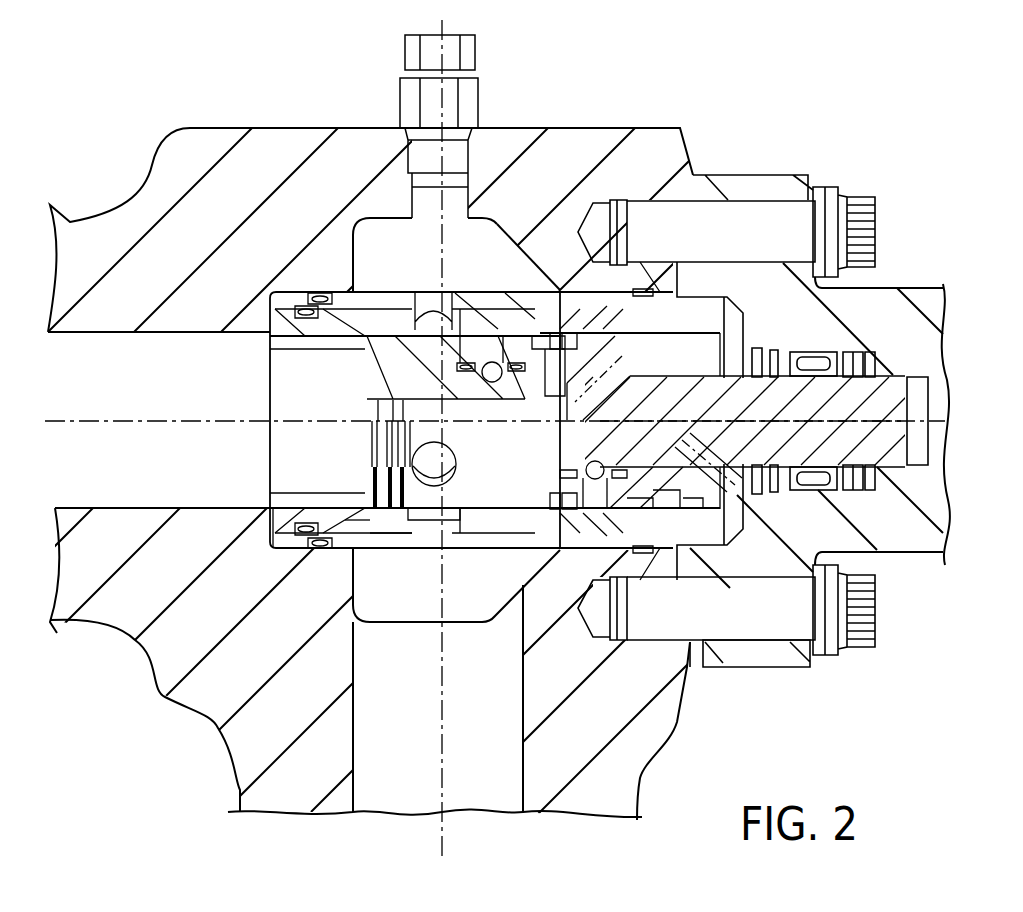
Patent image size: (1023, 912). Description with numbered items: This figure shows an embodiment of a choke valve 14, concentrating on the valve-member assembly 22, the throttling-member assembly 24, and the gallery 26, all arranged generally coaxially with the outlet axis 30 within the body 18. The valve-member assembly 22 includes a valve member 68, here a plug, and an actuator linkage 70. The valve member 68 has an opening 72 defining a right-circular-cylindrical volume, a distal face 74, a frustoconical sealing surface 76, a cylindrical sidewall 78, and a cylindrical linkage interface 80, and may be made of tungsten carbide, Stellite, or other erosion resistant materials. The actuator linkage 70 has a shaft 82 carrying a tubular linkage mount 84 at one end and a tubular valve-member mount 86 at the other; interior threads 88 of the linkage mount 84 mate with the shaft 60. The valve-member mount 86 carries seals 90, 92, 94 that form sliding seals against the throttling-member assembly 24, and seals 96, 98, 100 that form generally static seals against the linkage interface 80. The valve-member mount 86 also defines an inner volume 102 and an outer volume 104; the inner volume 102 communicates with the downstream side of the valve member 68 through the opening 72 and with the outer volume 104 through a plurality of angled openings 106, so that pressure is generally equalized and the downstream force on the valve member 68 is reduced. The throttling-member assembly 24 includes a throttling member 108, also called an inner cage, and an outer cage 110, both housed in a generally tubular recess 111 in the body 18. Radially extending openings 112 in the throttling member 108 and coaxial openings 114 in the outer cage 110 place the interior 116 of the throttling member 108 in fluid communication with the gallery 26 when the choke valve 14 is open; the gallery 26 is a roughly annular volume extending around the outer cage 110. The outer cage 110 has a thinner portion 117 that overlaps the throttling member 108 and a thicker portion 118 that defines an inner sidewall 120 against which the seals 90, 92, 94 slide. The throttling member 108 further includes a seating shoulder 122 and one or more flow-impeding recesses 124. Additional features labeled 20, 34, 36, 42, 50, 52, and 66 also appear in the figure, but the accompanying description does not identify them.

The choke valve 14 is at (806, 98).
The body 18 is at (137, 193).
The end block 20 is at (922, 288).
The valve-member assembly 22 is at (784, 356).
The throttling-member assembly 24 is at (588, 282).
The gallery 26 is at (504, 240).
The outlet axis 30 is at (173, 423).
The outlet passage 34 is at (353, 750).
The vertical axis 36 is at (445, 708).
The fastener bolt 42 is at (706, 170).
The mounting plate 50 is at (650, 200).
The bolt hole 52 is at (659, 278).
The shaft 60 is at (940, 388).
The inlet bore 66 is at (126, 348).
The valve member 68 is at (368, 376).
The actuator linkage 70 is at (665, 408).
The opening 72 is at (380, 414).
The distal face 74 is at (365, 350).
The sealing surface 76 is at (283, 348).
The sidewall 78 is at (421, 298).
The linkage interface 80 is at (517, 299).
The shaft 82 is at (734, 401).
The linkage mount 84 is at (892, 385).
The valve-member mount 86 is at (697, 299).
The interior threads 88 is at (868, 373).
The seal 90 is at (603, 331).
The seal 92 is at (572, 331).
The seal 94 is at (547, 331).
The seal 96 is at (452, 372).
The seal 98 is at (497, 486).
The seal 100 is at (518, 361).
The inner volume 102 is at (579, 448).
The outer volume 104 is at (672, 369).
The angled openings 106 is at (590, 393).
The throttling member 108 is at (314, 510).
The outer cage 110 is at (339, 548).
The tubular recess 111 is at (262, 296).
The openings 112 is at (378, 297).
The openings 114 is at (467, 298).
The interior 116 is at (303, 453).
The thinner portion 117 is at (490, 288).
The thicker portion 118 is at (694, 292).
The inner sidewall 120 is at (767, 368).
The seating shoulder 122 is at (350, 511).
The flow-impeding recesses 124 is at (389, 534).